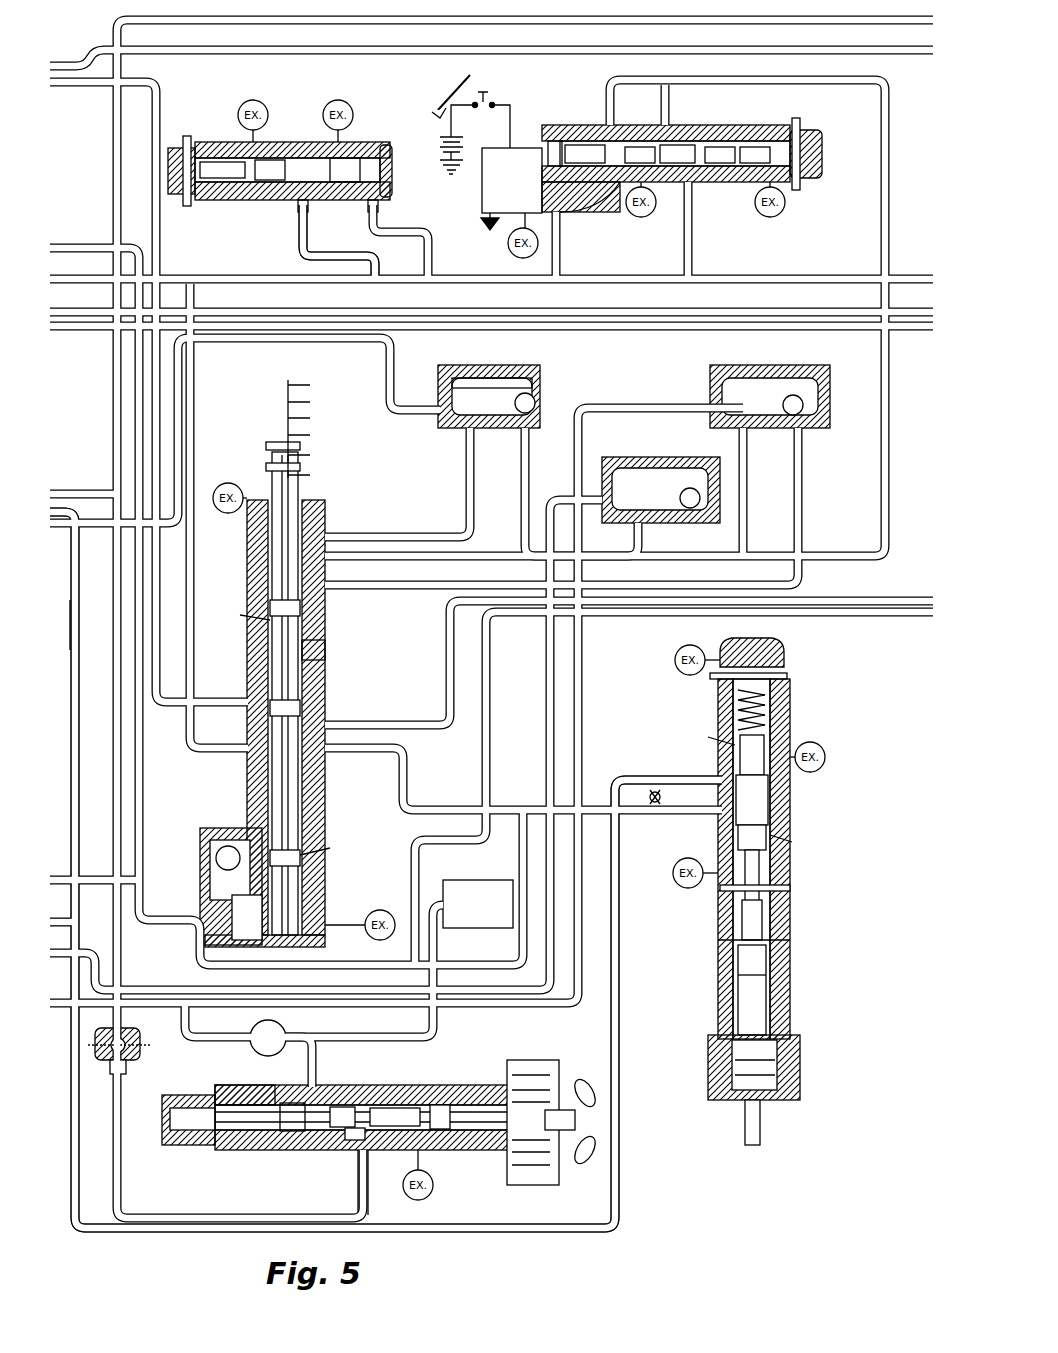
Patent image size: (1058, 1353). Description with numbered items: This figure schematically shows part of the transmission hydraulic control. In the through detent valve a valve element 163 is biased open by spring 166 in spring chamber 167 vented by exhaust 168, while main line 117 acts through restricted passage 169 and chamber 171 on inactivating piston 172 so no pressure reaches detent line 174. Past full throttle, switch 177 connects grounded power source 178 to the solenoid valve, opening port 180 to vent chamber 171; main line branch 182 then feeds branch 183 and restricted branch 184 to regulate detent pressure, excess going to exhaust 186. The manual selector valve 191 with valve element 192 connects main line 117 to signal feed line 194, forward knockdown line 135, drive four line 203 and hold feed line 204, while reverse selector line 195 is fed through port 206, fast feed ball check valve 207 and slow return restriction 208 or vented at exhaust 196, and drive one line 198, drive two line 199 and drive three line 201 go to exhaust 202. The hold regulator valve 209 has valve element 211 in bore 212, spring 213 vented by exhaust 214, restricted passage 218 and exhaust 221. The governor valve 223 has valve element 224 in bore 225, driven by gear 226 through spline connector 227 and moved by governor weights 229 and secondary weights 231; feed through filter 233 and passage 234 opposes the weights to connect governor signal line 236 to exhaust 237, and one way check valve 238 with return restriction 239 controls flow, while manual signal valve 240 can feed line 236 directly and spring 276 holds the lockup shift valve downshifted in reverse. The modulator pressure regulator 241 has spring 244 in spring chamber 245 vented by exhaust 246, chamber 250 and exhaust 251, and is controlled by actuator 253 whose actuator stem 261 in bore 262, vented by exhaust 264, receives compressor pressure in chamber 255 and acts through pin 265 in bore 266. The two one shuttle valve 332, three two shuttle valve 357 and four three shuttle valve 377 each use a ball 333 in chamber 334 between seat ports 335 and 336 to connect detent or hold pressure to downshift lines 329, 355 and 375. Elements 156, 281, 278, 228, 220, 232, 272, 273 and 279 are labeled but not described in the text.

The pressure line 156 is at (60, 66).
The drive four line 203 is at (55, 84).
The reverse selector line 195 is at (58, 248).
The main line 117 is at (55, 280).
The exhaust 246 is at (60, 312).
The line 281 is at (92, 328).
The governor signal line 236 is at (58, 494).
The two one downshift line 329 is at (78, 550).
The restricted passage 218 is at (78, 600).
The three two downshift line 355 is at (58, 953).
The four three downshift line 375 is at (175, 1005).
The signal feed line 194 is at (438, 1020).
The forward knockdown line 135 is at (370, 722).
The restricted branch 184 is at (630, 85).
The line 278 is at (672, 778).
The port 228 is at (380, 212).
The gear 226 is at (298, 212).
The spline connector 227 is at (360, 232).
The hold regulator valve 209 is at (300, 173).
The spring 213 is at (215, 158).
The valve element 211 is at (270, 158).
The bore 212 is at (318, 158).
The end plug 220 is at (386, 150).
The exhaust 214 is at (253, 100).
The exhaust 221 is at (350, 105).
The switch 177 is at (587, 171).
The grounded power source 178 is at (461, 140).
The branch 182 is at (506, 244).
The detent line 174 is at (678, 176).
The port 180 is at (575, 190).
The inactivating piston 172 is at (582, 145).
The valve element 163 is at (682, 150).
The spring chamber 167 is at (725, 147).
The spring 166 is at (775, 145).
The branch 183 is at (670, 100).
The exhaust 186 is at (636, 217).
The exhaust 168 is at (786, 202).
The restricted passage 169 is at (563, 226).
The chamber 171 is at (554, 141).
The two one shuttle valve 332 is at (592, 448).
The ball 333 is at (535, 403).
The chamber 334 is at (525, 378).
The depressed seat port 336 is at (465, 430).
The depressed seat port 335 is at (520, 428).
The four three shuttle valve 377 is at (802, 360).
The three two shuttle valve 357 is at (624, 447).
The manual selector valve 191 is at (268, 661).
The valve element 192 is at (300, 828).
The drive one line 198 is at (328, 537).
The drive two line 199 is at (330, 556).
The drive three line 201 is at (340, 575).
The hold feed line 204 is at (333, 680).
The exhaust 202 is at (232, 488).
The port 206 is at (215, 882).
The fast feed ball check valve 207 is at (215, 855).
The slow return restriction 208 is at (240, 890).
The exhaust 196 is at (365, 915).
The filter 233 is at (478, 928).
The one way check valve 238 is at (140, 1046).
The return restriction 239 is at (112, 1076).
The governor valve 223 is at (378, 1112).
The bore 225 is at (342, 1107).
The valve element 224 is at (388, 1108).
The secondary weights 231 is at (515, 1095).
The passage 234 is at (336, 1148).
The governor weights 229 is at (530, 1062).
The manual signal valve 240 is at (288, 1032).
The exhaust 237 is at (433, 1185).
The line 232 is at (368, 1190).
The modulator pressure regulator 241 is at (775, 895).
The spring 244 is at (765, 705).
The spring chamber 245 is at (770, 738).
The land 272 is at (770, 783).
The land 273 is at (775, 805).
The chamber 250 is at (770, 840).
The bore 266 is at (790, 885).
The pin 265 is at (740, 895).
The actuator stem 261 is at (765, 975).
The bore 262 is at (738, 978).
The chamber 255 is at (775, 1068).
The spring 276 is at (680, 652).
The exhaust 251 is at (825, 755).
The exhaust 264 is at (673, 875).
The check valve 279 is at (655, 805).
The actuator 253 is at (708, 959).